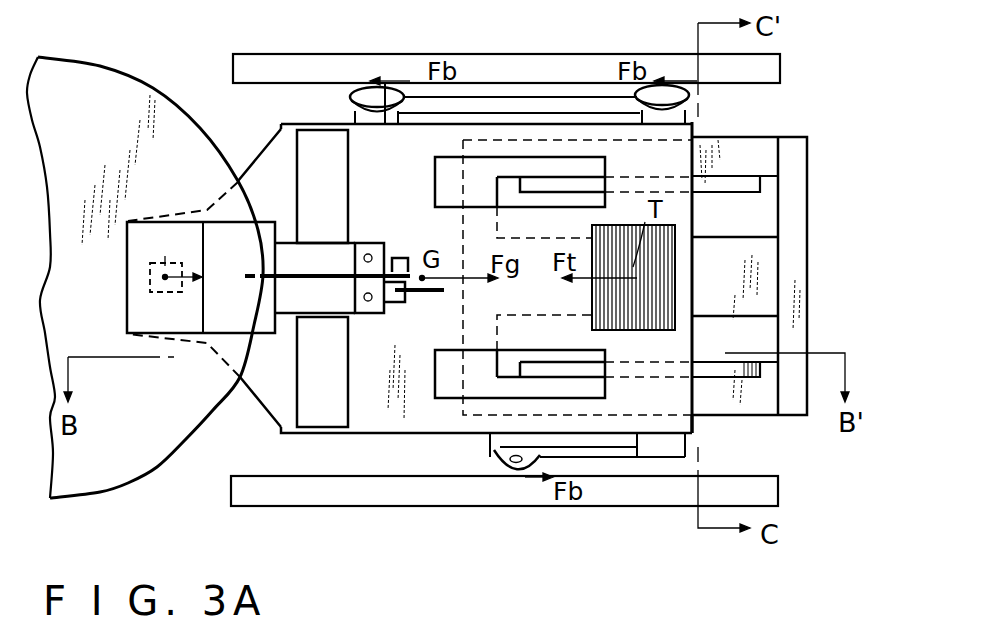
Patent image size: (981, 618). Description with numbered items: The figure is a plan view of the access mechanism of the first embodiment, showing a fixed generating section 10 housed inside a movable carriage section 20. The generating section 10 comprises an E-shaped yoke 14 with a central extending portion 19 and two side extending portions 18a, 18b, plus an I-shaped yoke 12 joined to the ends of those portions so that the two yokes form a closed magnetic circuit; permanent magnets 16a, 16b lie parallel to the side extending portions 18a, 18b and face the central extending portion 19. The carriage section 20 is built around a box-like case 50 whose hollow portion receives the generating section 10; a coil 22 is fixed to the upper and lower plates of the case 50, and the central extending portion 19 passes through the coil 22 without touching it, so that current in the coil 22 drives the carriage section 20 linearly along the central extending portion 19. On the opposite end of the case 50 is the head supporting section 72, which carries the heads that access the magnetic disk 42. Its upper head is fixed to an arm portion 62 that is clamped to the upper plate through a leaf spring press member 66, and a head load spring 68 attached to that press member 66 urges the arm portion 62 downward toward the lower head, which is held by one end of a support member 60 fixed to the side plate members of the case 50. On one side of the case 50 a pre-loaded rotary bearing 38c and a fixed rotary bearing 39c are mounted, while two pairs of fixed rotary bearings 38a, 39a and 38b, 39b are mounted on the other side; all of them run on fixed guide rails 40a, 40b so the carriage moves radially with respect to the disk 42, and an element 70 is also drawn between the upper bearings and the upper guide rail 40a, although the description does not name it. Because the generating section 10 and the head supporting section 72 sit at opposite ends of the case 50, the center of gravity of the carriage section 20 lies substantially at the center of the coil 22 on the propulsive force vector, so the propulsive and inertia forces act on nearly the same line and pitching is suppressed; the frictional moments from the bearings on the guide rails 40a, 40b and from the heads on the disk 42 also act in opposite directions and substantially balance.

The generating section 10 is at (582, 300).
The I-shaped yoke 12 is at (795, 237).
The E-shaped yoke 14 is at (725, 417).
The permanent magnet 16a is at (762, 185).
The permanent magnet 16b is at (760, 368).
The side extending portion 18a is at (765, 158).
The side extending portion 18b is at (757, 400).
The central extending portion 19 is at (765, 272).
The carriage section 20 is at (417, 437).
The coil 22 is at (675, 263).
The rotary bearing 38a is at (731, 105).
The fixed rotary bearing 39a is at (680, 97).
The rotary bearing 38b is at (418, 64).
The fixed rotary bearing 39b is at (367, 90).
The rotary bearing 38c is at (557, 493).
The fixed rotary bearing 39c is at (498, 473).
The guide rail 40a is at (288, 67).
The guide rail 40b is at (358, 493).
The magnetic disk 42 is at (113, 490).
The case 50 is at (368, 437).
The support member 60 is at (258, 405).
The arm portion 62 is at (257, 320).
The leaf spring press member 66 is at (372, 248).
The head load spring 68 is at (295, 268).
The belt 70 is at (550, 97).
The head supporting section 72 is at (203, 367).